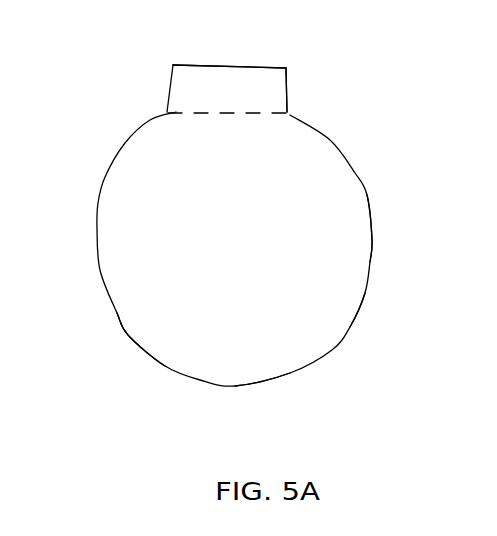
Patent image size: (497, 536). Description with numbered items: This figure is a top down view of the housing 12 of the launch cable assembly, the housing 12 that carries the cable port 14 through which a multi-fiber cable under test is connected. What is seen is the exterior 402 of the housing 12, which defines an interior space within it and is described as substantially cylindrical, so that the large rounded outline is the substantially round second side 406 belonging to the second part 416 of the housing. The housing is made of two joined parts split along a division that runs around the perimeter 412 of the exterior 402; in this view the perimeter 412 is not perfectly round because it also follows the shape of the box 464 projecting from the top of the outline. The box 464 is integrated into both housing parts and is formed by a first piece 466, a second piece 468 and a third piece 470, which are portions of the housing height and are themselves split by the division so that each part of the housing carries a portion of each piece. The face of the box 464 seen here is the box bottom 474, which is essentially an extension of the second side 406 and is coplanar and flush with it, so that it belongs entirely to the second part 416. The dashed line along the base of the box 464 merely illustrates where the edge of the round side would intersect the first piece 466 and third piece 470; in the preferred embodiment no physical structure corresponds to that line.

The housing 12 is at (386, 94).
The cable port 14 is at (270, 365).
The exterior 402 is at (118, 228).
The second side 406 is at (350, 265).
The perimeter 412 is at (128, 335).
The second part 416 is at (343, 305).
The box 464 is at (207, 82).
The first piece 466 is at (170, 92).
The second piece 468 is at (238, 65).
The third piece 470 is at (288, 85).
The box bottom 474 is at (262, 85).